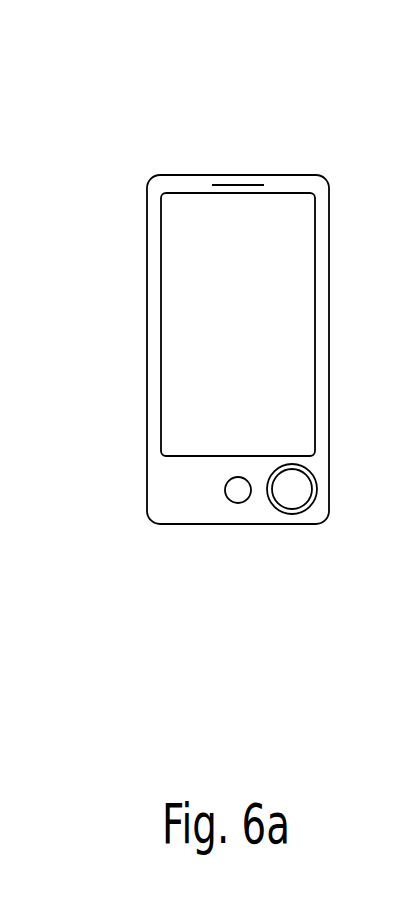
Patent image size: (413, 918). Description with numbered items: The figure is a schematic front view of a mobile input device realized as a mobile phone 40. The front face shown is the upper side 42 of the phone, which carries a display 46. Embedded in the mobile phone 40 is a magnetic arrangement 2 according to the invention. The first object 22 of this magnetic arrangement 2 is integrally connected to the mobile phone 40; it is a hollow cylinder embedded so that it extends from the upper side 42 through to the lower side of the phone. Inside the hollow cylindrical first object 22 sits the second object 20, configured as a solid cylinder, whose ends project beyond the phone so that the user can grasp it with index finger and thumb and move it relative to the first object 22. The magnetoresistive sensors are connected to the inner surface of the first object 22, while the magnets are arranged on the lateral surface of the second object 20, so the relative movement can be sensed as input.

The mobile phone 40 is at (238, 142).
The upper side 42 is at (199, 266).
The display 46 is at (279, 222).
The magnetic arrangement 2 is at (272, 466).
The first object 22 is at (268, 480).
The second object 20 is at (292, 489).